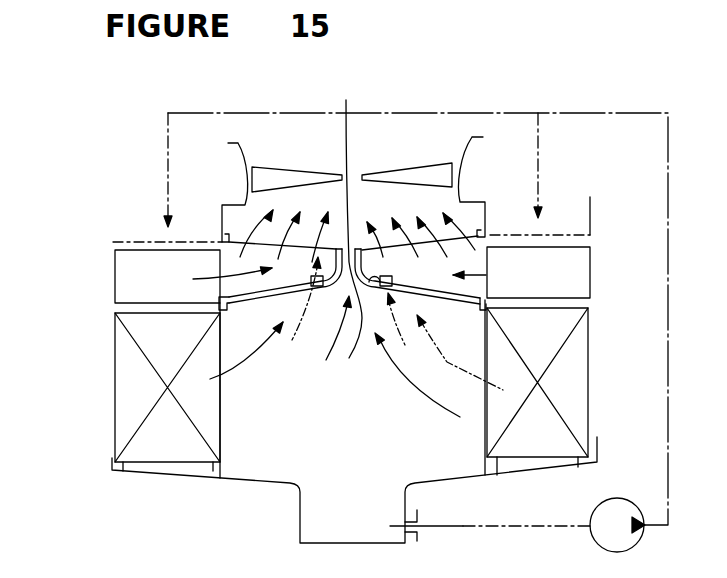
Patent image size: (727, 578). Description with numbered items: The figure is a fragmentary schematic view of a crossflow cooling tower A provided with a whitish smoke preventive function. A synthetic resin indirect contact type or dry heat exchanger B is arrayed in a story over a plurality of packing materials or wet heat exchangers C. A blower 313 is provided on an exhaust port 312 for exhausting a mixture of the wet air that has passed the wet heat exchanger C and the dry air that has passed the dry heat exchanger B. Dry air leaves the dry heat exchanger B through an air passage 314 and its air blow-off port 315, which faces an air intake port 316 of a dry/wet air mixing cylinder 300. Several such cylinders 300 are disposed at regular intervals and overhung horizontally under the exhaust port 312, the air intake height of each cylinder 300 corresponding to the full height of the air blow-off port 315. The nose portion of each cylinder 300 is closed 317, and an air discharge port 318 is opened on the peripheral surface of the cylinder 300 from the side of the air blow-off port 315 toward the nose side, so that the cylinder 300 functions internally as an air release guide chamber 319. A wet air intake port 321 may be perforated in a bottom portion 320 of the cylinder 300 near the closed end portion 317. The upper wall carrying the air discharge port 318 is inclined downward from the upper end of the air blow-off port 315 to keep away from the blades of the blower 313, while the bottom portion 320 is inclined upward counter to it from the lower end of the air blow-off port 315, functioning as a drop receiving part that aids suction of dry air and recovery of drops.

The dry/wet air mixing cylinder 300 is at (220, 357).
The exhaust port 312 is at (397, 198).
The blower 313 is at (282, 167).
The air passage 314 is at (147, 275).
The air blow-off port 315 is at (220, 238).
The air intake port 316 is at (229, 292).
The closed nose portion 317 is at (346, 104).
The air discharge port 318 is at (465, 230).
The air release guide chamber 319 is at (308, 289).
The bottom portion 320 is at (478, 305).
The wet air intake port 321 is at (356, 356).
The crossflow cooling tower A is at (627, 108).
The dry heat exchanger B is at (113, 290).
The wet heat exchanger C is at (115, 388).